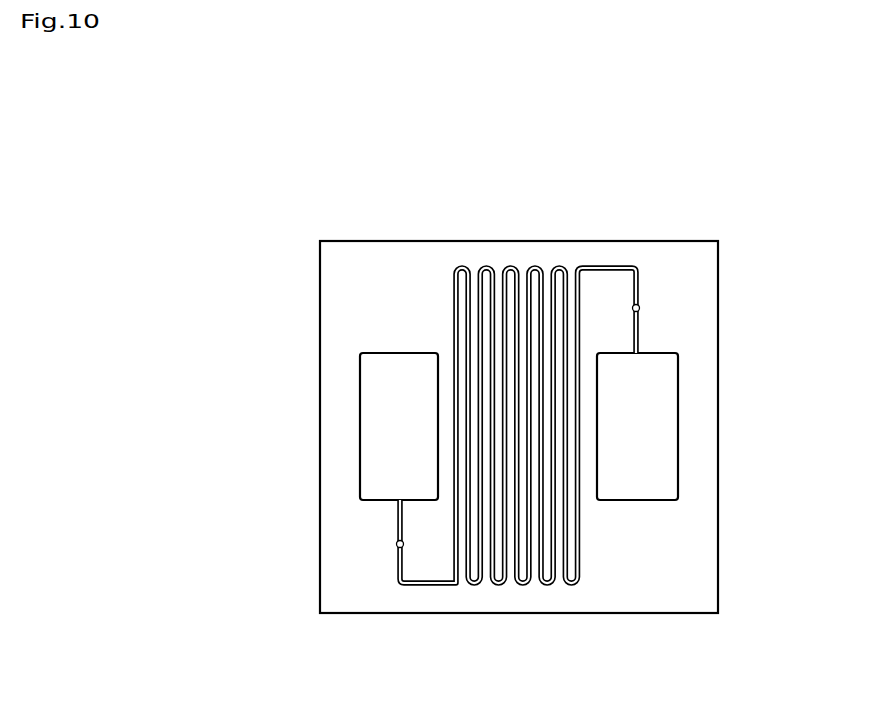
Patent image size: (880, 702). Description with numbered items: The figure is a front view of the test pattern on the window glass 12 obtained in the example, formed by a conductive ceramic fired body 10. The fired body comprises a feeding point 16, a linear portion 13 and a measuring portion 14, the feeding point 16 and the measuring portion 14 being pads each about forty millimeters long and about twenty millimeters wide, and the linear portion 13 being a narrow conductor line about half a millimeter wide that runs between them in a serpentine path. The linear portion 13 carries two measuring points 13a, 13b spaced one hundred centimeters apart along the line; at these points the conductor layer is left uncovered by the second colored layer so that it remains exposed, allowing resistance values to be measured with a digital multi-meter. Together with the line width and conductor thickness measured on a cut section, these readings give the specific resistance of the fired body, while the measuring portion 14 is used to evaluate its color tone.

The conductive ceramic fired body 10 is at (397, 588).
The window glass 12 is at (363, 240).
The linear portion 13 is at (537, 263).
The measuring point 13a is at (396, 546).
The measuring point 13b is at (640, 307).
The measuring portion 14 is at (660, 437).
The feeding point 16 is at (367, 432).